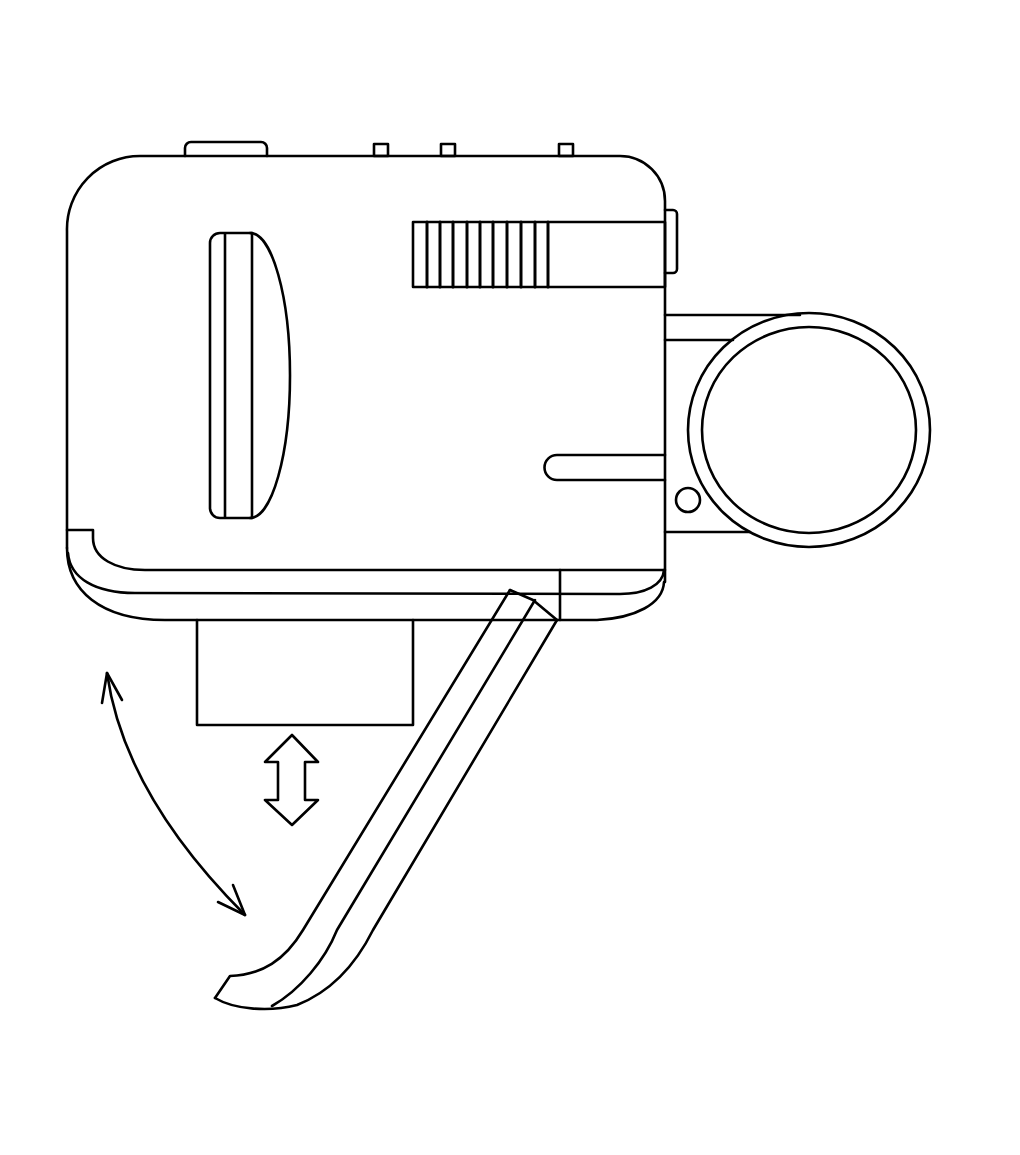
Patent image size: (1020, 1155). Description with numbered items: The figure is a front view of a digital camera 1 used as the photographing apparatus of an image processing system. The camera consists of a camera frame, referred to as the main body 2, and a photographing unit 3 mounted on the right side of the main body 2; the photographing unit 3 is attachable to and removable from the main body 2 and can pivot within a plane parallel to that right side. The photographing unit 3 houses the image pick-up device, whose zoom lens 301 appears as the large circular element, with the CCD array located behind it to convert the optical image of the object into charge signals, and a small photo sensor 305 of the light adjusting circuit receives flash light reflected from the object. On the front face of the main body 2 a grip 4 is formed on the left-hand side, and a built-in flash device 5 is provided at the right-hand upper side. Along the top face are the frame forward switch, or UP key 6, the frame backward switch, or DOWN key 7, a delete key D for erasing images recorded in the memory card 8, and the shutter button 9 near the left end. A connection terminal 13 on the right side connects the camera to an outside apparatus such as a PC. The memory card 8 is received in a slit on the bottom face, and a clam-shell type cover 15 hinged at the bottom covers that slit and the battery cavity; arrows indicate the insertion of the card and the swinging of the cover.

The digital camera 1 is at (340, 120).
The main body 2 is at (298, 155).
The photographing unit 3 is at (811, 313).
The grip 4 is at (275, 388).
The built-in flash device 5 is at (528, 288).
The forward switch (UP key) 6 is at (380, 144).
The backward switch (DOWN key) 7 is at (447, 144).
The memory card 8 is at (197, 665).
The shutter button 9 is at (210, 142).
The connection terminal 13 is at (678, 248).
The clam-shell type cover 15 is at (457, 787).
The zoom lens 301 is at (830, 507).
The photo sensor 305 is at (689, 512).
The delete key D is at (566, 144).